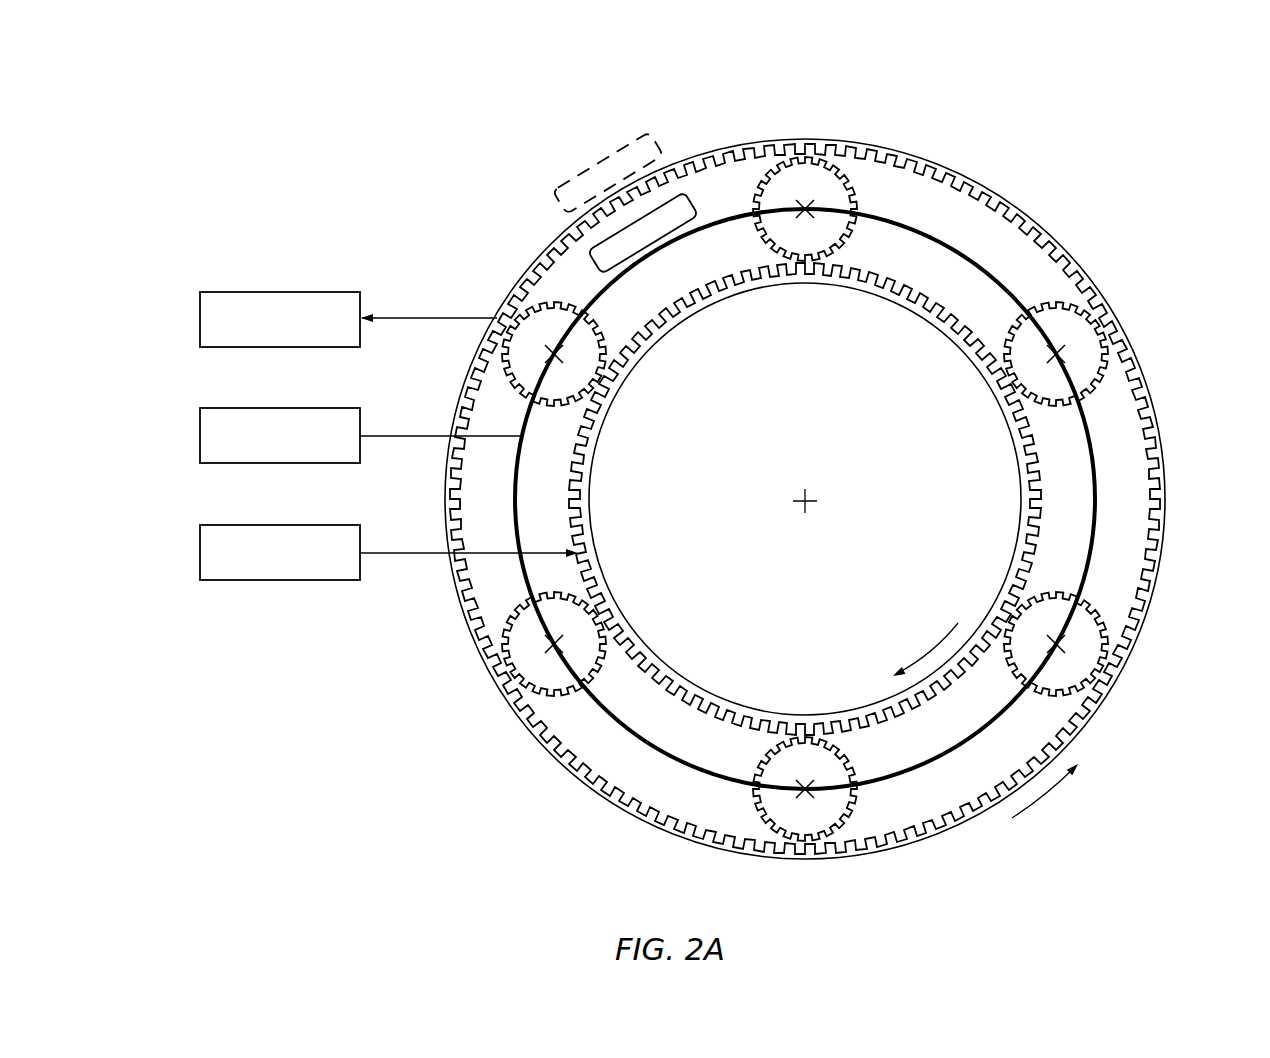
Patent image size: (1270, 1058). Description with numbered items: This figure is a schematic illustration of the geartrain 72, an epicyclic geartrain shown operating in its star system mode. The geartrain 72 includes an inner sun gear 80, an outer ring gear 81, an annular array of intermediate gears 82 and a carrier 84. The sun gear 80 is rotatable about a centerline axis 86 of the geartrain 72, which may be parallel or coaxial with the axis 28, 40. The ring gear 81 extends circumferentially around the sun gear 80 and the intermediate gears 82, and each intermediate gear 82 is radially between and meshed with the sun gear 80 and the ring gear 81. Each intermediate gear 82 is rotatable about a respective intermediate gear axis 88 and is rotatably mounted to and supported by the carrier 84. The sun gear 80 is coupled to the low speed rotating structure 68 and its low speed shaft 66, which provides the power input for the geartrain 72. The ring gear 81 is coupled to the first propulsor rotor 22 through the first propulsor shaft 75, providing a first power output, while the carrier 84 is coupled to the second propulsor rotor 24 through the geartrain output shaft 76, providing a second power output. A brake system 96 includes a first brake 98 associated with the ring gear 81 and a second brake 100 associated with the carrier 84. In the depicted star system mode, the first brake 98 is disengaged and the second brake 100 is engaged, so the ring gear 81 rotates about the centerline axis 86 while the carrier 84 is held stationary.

The geartrain 72 is at (1190, 127).
The ring gear 81 is at (1032, 200).
The carrier 84 is at (1105, 501).
The sun gear 80 is at (998, 428).
The intermediate gear 82 is at (850, 172).
The intermediate gear axis 88 is at (806, 212).
The axis 28 is at (816, 536).
The axis 40 is at (816, 536).
The centerline axis 86 is at (808, 505).
The brake system 96 is at (621, 127).
The first brake 98 is at (581, 166).
The second brake 100 is at (697, 203).
The first propulsor rotor 22 is at (292, 319).
The first propulsor shaft 75 is at (200, 312).
The second propulsor rotor 24 is at (302, 435).
The geartrain output shaft 76 is at (200, 428).
The low speed shaft 66 is at (333, 552).
The low speed rotating structure 68 is at (200, 545).